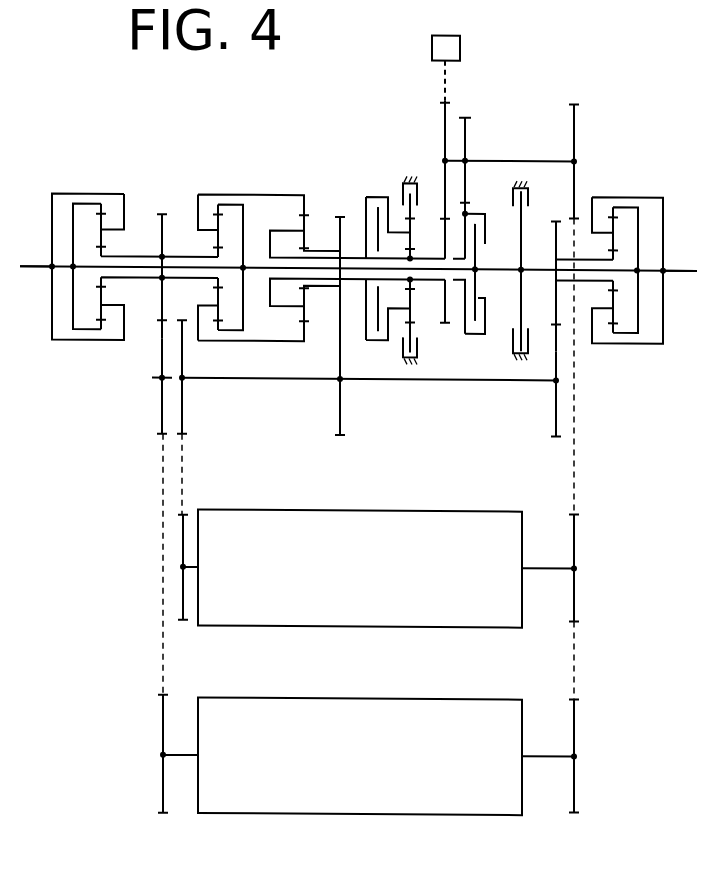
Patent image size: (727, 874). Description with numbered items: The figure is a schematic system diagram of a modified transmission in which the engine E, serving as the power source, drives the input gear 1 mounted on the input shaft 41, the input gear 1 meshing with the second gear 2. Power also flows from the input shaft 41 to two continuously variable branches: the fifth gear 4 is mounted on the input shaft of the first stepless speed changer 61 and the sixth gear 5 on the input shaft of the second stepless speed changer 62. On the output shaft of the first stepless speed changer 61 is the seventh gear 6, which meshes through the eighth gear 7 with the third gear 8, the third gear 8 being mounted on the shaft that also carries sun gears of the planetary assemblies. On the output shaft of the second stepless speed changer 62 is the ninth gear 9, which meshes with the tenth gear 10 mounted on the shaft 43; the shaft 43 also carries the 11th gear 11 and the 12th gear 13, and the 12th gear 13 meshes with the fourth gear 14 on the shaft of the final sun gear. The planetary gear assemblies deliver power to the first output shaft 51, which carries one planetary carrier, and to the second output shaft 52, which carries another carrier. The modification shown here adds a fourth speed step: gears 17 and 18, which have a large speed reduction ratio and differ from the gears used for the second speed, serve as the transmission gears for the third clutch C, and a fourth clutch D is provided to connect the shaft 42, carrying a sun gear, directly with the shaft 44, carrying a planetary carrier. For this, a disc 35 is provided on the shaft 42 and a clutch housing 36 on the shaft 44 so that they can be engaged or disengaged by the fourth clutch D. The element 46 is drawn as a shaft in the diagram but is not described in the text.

The input gear 1 is at (443, 127).
The second gear 2 is at (445, 305).
The fifth gear 4 is at (578, 727).
The sixth gear 5 is at (577, 545).
The seventh gear 6 is at (162, 731).
The eighth gear 7 is at (160, 415).
The third gear 8 is at (164, 293).
The ninth gear 9 is at (180, 550).
The tenth gear 10 is at (184, 416).
The 11th gear 11 is at (341, 416).
The 12th gear 13 is at (554, 416).
The fourth gear 14 is at (556, 237).
The gear 17 is at (467, 132).
The gear 18 is at (466, 334).
The disc 35 is at (368, 197).
The clutch housing 36 is at (366, 208).
The input shaft 41 is at (528, 158).
The shaft 42 is at (426, 257).
The shaft 43 is at (236, 380).
The shaft 44 is at (353, 257).
The shaft 46 is at (534, 281).
The first output shaft 51 is at (32, 270).
The second output shaft 52 is at (681, 271).
The first stepless speed changer 61 is at (333, 815).
The second stepless speed changer 62 is at (335, 627).
The third clutch C is at (477, 213).
The fourth clutch D is at (382, 196).
The engine E is at (461, 47).